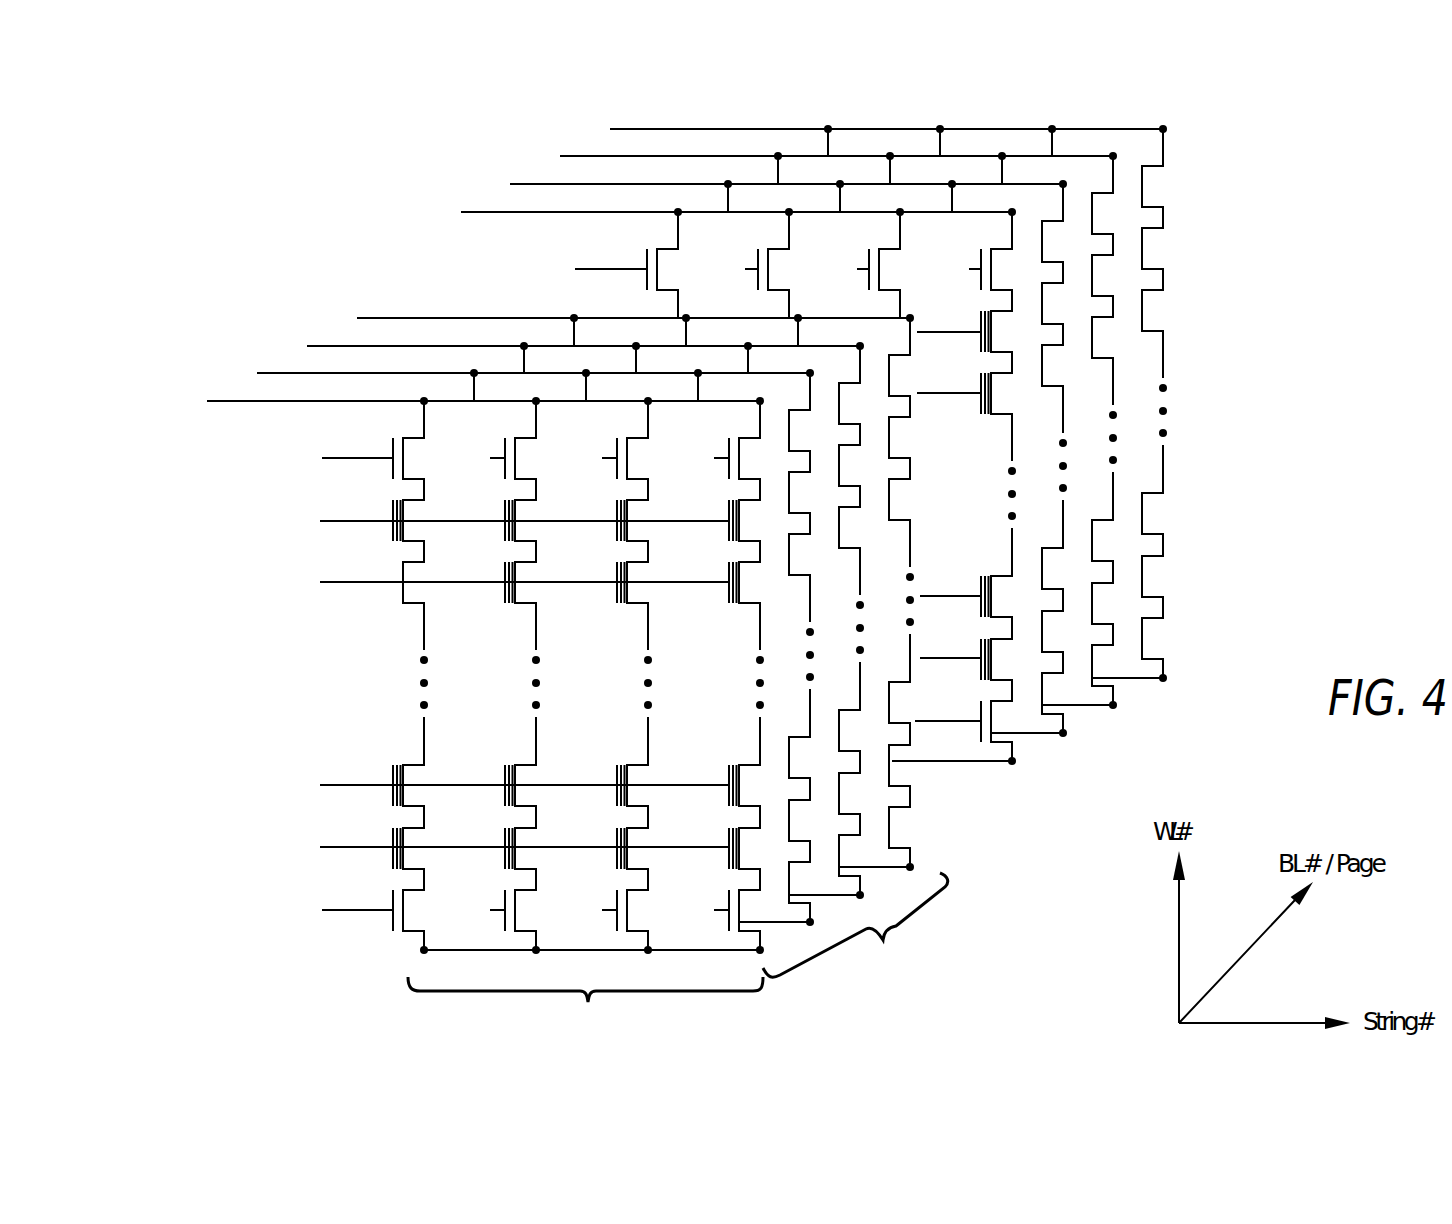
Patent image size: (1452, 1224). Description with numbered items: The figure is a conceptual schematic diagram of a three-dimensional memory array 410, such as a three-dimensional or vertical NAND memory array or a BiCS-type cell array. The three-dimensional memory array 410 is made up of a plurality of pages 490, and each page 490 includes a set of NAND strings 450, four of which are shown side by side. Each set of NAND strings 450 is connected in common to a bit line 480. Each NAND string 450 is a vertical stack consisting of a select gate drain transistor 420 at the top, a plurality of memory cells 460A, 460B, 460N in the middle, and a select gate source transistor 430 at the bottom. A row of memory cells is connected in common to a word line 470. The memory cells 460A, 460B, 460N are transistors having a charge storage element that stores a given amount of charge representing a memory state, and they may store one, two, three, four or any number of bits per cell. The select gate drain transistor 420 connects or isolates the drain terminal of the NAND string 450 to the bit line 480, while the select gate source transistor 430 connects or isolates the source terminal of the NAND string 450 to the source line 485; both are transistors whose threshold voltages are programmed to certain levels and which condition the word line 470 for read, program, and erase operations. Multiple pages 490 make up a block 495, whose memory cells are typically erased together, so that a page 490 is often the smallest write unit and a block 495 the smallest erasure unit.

The three-dimensional memory array 410 is at (212, 240).
The select gate drain transistor 420 is at (283, 473).
The select gate source transistor 430 is at (250, 910).
The NAND strings 450 is at (512, 718).
The memory cell 460A is at (393, 838).
The memory cell 460B is at (393, 775).
The memory cell 460N is at (393, 530).
The word line 470 is at (250, 848).
The bit line 480 is at (247, 403).
The source line 485 is at (682, 952).
The page 490 is at (1172, 413).
The block 495 is at (855, 925).